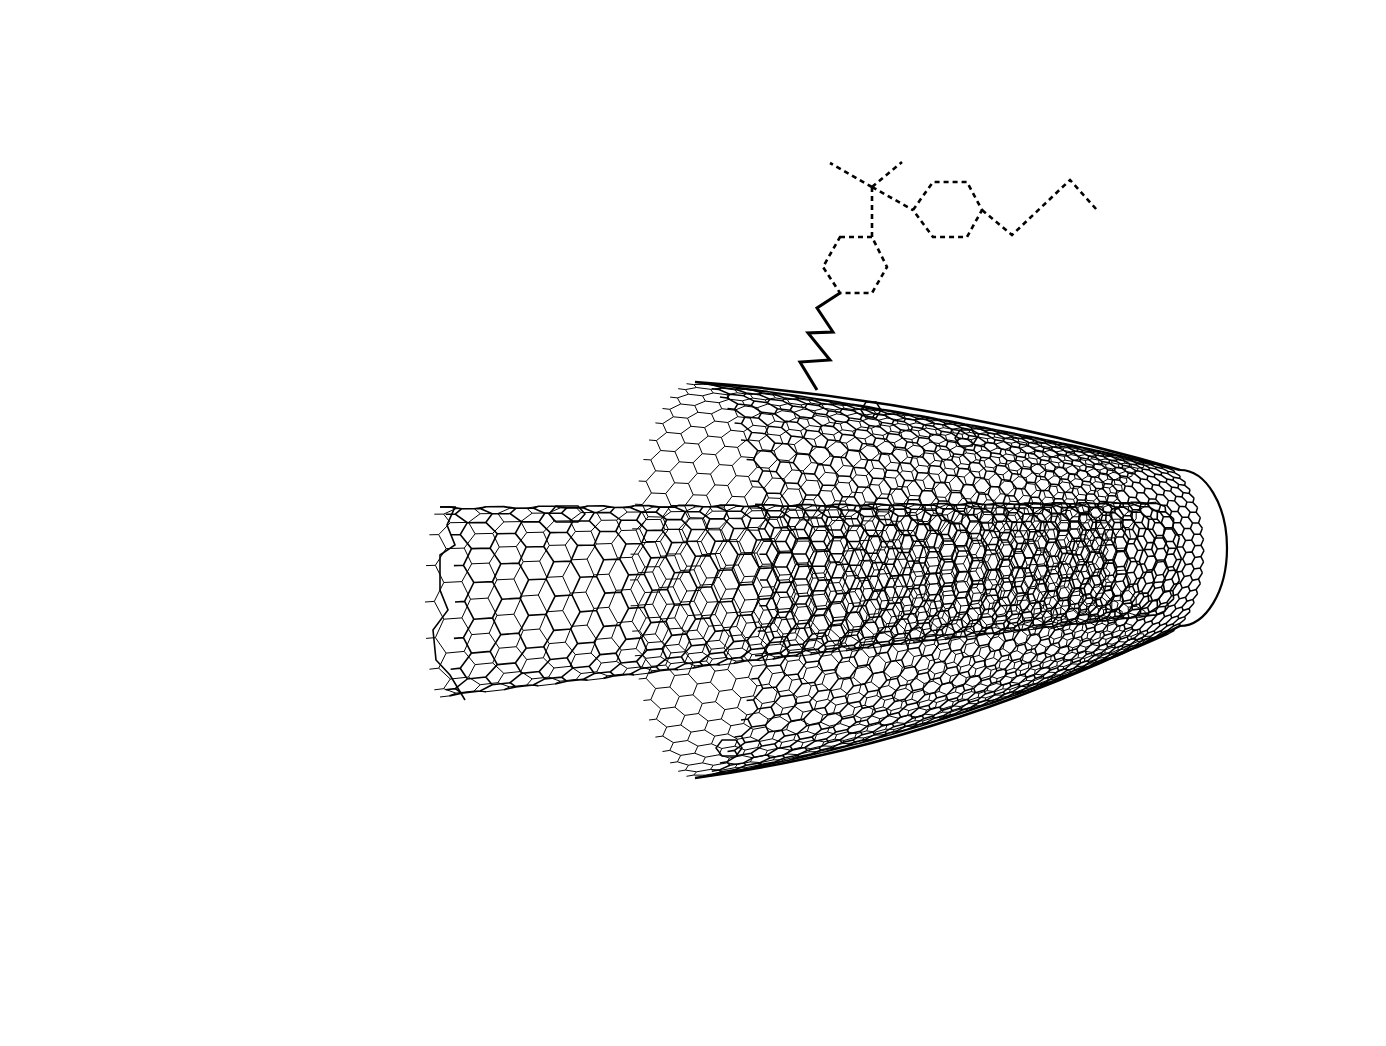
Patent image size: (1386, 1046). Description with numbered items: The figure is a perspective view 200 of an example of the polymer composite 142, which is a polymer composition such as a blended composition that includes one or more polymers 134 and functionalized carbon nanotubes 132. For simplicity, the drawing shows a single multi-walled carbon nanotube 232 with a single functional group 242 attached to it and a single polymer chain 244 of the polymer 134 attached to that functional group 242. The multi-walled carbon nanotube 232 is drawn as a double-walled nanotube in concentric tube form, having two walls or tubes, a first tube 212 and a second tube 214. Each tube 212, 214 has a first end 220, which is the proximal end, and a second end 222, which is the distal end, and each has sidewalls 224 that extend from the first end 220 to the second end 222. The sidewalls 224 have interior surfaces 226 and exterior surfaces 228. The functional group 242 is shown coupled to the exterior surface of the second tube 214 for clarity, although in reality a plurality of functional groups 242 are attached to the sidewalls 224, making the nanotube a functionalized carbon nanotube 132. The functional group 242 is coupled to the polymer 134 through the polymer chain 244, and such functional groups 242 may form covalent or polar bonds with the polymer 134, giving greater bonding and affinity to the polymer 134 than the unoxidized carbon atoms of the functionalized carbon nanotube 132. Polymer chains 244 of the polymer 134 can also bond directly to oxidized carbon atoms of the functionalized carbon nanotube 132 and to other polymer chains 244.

The perspective view 200 is at (207, 111).
The functionalized carbon nanotube 132 is at (1247, 338).
The polymer 134 is at (1116, 118).
The polymer composite 142 is at (514, 153).
The first tube 212 is at (500, 503).
The second tube 214 is at (877, 400).
The first end 220 is at (435, 588).
The second end 222 is at (1202, 488).
The sidewalls 224 is at (567, 503).
The interior surfaces 226 is at (1060, 438).
The exterior surfaces 228 is at (733, 737).
The multi-walled carbon nanotube 232 is at (1079, 722).
The functional group 242 is at (810, 333).
The polymer chain 244 is at (972, 193).